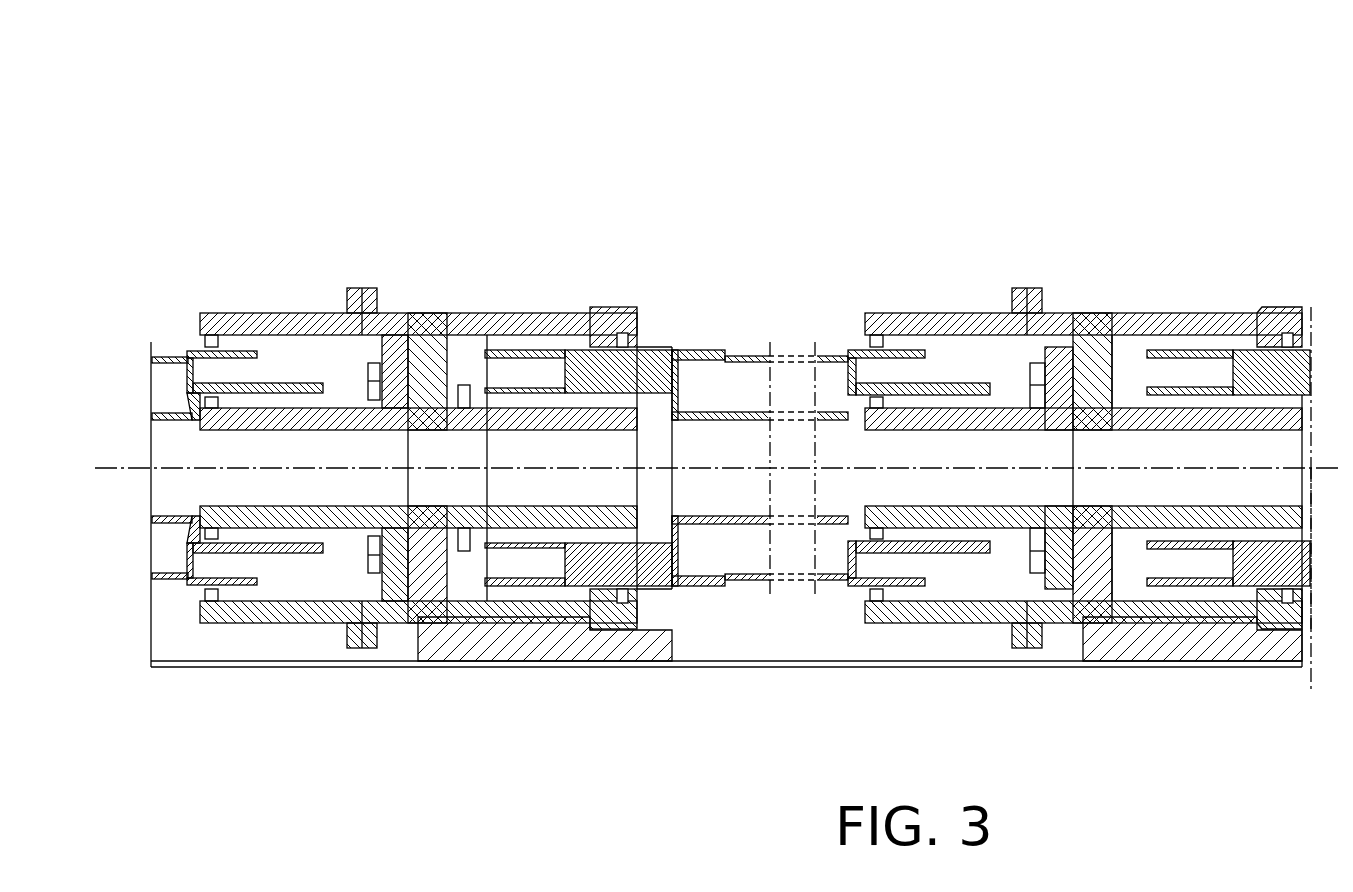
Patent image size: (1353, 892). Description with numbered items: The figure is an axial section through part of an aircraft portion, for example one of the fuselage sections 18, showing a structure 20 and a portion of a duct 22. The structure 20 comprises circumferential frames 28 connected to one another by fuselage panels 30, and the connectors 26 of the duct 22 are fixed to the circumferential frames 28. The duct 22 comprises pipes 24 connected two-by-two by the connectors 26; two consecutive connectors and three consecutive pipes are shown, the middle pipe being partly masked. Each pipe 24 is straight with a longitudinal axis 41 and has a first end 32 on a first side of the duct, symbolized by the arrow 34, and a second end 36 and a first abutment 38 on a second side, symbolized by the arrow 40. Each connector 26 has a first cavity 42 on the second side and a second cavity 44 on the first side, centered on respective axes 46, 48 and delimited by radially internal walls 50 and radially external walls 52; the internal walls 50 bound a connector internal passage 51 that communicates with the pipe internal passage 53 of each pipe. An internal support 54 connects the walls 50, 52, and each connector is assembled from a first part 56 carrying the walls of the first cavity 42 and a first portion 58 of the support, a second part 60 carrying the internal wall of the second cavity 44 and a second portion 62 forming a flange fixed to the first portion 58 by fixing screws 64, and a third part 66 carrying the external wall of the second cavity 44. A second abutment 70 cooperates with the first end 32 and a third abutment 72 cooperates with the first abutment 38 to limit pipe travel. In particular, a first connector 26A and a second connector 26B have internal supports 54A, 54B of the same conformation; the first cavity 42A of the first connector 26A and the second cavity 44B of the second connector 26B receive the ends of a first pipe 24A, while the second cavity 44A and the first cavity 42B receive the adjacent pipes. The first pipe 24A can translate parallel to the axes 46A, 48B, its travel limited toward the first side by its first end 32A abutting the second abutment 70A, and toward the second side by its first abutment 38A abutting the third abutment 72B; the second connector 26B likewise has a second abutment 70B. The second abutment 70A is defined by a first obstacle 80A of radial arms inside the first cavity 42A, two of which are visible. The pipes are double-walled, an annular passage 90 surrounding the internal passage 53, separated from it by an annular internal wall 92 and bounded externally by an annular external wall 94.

The fuselage section 18 is at (925, 148).
The structure 20 is at (796, 669).
The duct 22 is at (228, 302).
The pipe 24 is at (158, 354).
The first pipe 24A is at (665, 347).
The connector 26 is at (418, 439).
The first connector 26A is at (465, 311).
The second connector 26B is at (1130, 311).
The circumferential frame 28 is at (595, 650).
The fuselage panel 30 is at (707, 662).
The first end 32 is at (768, 545).
The first end of the first pipe 32A is at (458, 600).
The first side 34 is at (122, 132).
The second end 36 is at (1005, 570).
The first abutment 38 is at (207, 548).
The first abutment of the first pipe 38A is at (905, 540).
The second side 40 is at (1268, 177).
The longitudinal axis 41 is at (796, 465).
The first cavity 42 is at (529, 558).
The first cavity of the first connector 42A is at (560, 585).
The first cavity of the second connector 42B is at (1262, 345).
The second cavity 44 is at (304, 531).
The second cavity of the first connector 44A is at (334, 585).
The second cavity of the second connector 44B is at (965, 355).
The axis of the first cavity 46 is at (522, 531).
The axis of the first cavity of the first connector 46A is at (528, 590).
The axis of the second cavity 48 is at (283, 590).
The axis of the second cavity of the second connector 48B is at (966, 560).
The radially internal wall 50 is at (283, 440).
The connector internal passage 51 is at (244, 335).
The radially external wall 52 is at (555, 400).
The pipe internal passage 53 is at (745, 495).
The internal support 54 is at (466, 356).
The internal support of the first connector 54A is at (525, 140).
The internal support of the second connector 54B is at (1107, 190).
The first part 56 is at (630, 152).
The first portion of the internal support 58 is at (430, 345).
The second part 60 is at (352, 143).
The second portion of the internal support 62 is at (425, 400).
The fixing screw 64 is at (372, 365).
The third part 66 is at (280, 380).
The second abutment 70 is at (518, 435).
The second abutment of the first connector 70A is at (470, 388).
The second abutment of the second connector 70B is at (1108, 540).
The third abutment 72 is at (835, 408).
The third abutment of the second connector 72B is at (840, 400).
The first obstacle 80A is at (445, 545).
The annular passage 90 is at (754, 382).
The annular internal wall 92 is at (680, 590).
The annular external wall 94 is at (830, 582).